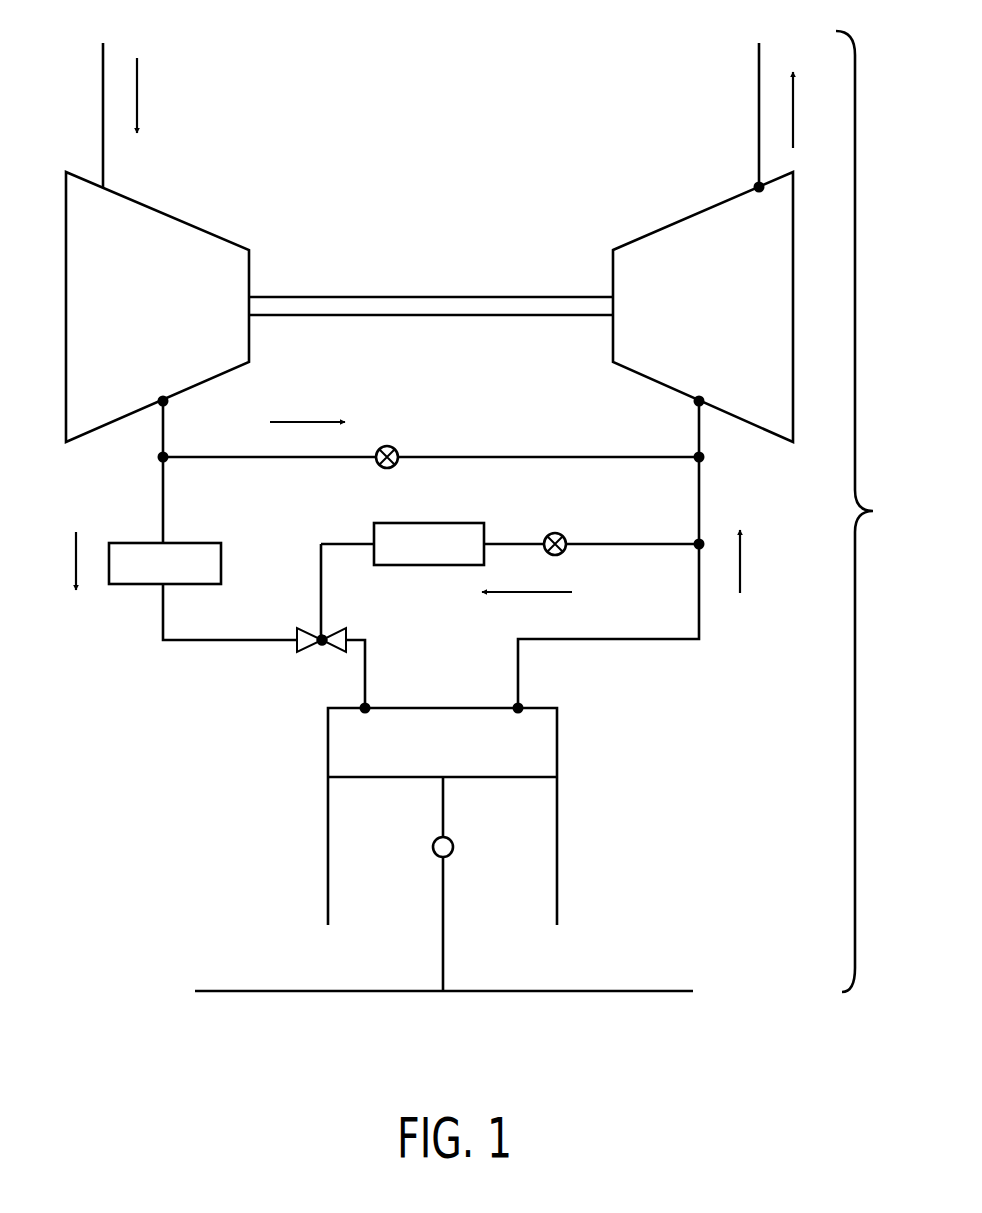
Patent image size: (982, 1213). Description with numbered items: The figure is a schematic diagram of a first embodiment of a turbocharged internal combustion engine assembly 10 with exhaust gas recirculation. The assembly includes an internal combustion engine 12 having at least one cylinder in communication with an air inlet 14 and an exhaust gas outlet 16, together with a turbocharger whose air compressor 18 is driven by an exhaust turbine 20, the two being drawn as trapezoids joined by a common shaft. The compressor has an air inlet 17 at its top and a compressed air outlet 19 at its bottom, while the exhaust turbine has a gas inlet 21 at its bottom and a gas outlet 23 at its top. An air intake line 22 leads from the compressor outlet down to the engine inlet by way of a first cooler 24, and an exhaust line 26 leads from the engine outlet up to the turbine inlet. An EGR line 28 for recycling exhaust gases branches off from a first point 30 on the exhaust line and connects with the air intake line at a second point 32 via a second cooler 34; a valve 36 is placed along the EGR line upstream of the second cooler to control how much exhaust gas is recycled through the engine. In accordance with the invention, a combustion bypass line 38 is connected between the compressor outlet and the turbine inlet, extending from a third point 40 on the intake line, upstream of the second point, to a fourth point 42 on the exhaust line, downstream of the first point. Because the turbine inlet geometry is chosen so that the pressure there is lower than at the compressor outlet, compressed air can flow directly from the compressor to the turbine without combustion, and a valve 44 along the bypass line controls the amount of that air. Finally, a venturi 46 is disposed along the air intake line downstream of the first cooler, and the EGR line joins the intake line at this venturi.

The turbocharged internal combustion engine assembly 10 is at (874, 511).
The internal combustion engine 12 is at (557, 838).
The air inlet 14 is at (366, 712).
The exhaust gas outlet 16 is at (520, 706).
The air inlet 17 is at (103, 187).
The air compressor 18 is at (183, 222).
The compressed air outlet 19 is at (168, 404).
The exhaust turbine 20 is at (662, 228).
The gas inlet 21 is at (699, 401).
The air intake line 22 is at (163, 490).
The gas outlet 23 is at (759, 187).
The first cooler 24 is at (130, 586).
The exhaust line 26 is at (700, 628).
The EGR line 28 is at (603, 544).
The first point 30 is at (699, 543).
The second point 32 is at (320, 646).
The second cooler 34 is at (455, 567).
The valve 36 is at (550, 536).
The combustion bypass line 38 is at (297, 460).
The third point 40 is at (163, 457).
The fourth point 42 is at (699, 457).
The valve 44 is at (394, 447).
The venturi 46 is at (297, 642).